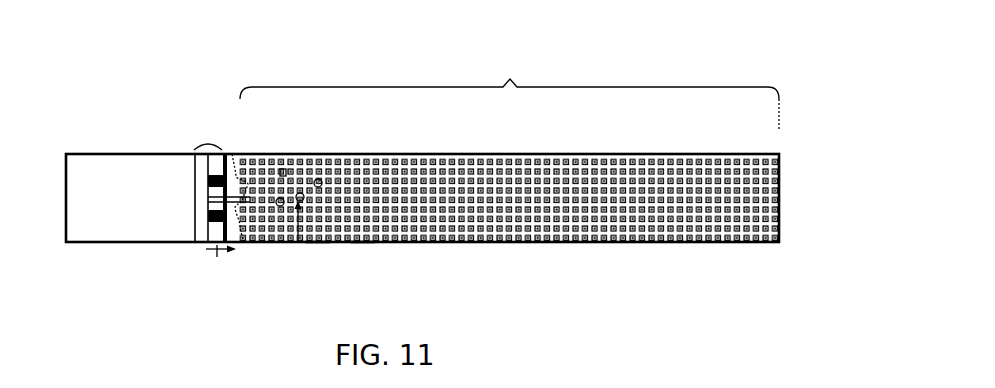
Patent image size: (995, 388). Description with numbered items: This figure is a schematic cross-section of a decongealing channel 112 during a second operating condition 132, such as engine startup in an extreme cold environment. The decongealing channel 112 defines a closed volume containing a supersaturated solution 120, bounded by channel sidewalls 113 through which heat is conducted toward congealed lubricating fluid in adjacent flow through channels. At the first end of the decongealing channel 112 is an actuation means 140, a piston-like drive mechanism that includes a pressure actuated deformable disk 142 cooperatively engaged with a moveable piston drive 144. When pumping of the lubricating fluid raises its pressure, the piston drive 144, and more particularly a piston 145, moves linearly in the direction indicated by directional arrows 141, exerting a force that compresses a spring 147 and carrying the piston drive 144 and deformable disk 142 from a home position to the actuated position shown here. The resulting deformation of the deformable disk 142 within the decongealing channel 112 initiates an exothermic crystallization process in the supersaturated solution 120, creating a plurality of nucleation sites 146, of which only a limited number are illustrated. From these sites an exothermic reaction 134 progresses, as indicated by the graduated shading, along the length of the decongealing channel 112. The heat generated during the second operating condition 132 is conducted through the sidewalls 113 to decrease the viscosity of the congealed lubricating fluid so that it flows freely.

The decongealing channel 112 is at (126, 118).
The channel sidewall 113 is at (424, 153).
The supersaturated solution 120 is at (362, 244).
The second operating condition 132 is at (692, 66).
The exothermic reaction 134 is at (317, 245).
The actuation means 140 is at (200, 255).
The directional arrows 141 is at (215, 258).
The pressure actuated deformable disk 142 is at (243, 251).
The moveable piston drive 144 is at (208, 141).
The piston 145 is at (229, 154).
The nucleation sites 146 is at (297, 245).
The spring 147 is at (195, 163).